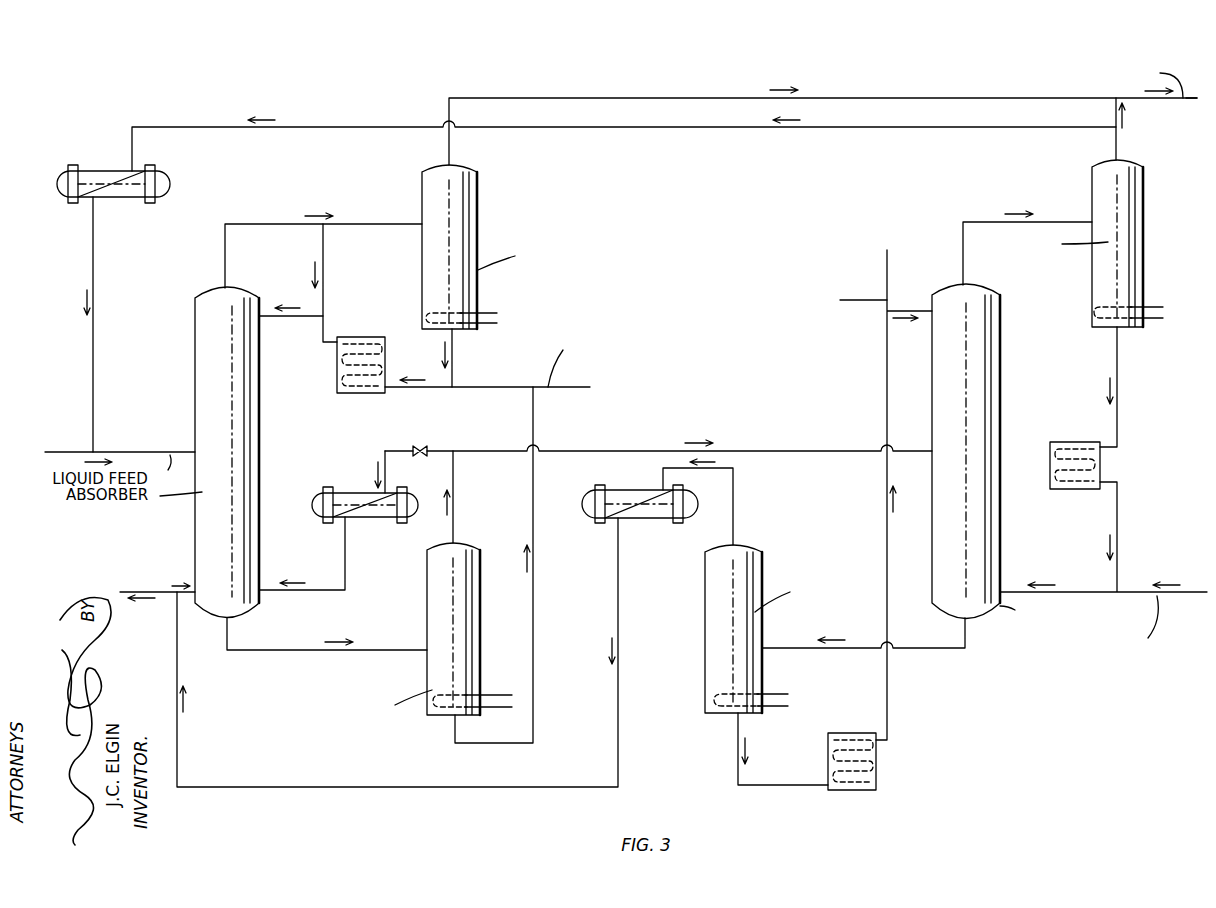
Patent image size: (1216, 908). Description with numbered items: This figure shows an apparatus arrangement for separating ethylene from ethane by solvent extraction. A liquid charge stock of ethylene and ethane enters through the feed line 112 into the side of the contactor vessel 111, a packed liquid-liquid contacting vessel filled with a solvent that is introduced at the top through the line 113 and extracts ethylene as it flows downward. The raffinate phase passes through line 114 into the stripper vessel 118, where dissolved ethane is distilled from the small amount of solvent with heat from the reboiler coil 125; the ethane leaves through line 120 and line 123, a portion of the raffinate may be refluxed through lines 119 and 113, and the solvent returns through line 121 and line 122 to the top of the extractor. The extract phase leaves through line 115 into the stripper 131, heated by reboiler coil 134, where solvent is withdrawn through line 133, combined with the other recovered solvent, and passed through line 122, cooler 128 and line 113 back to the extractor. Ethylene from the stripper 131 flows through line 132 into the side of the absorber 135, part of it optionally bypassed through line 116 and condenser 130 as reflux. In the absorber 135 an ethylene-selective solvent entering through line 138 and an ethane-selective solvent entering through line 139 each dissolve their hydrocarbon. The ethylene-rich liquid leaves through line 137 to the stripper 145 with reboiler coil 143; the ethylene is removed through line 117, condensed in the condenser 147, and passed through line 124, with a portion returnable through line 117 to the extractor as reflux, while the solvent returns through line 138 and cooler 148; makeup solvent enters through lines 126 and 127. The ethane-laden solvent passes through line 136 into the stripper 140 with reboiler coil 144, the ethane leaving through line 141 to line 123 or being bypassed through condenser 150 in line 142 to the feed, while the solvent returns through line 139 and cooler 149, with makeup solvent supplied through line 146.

The contactor vessel 111 is at (195, 352).
The feed line 112 is at (180, 452).
The line 113 is at (265, 318).
The line 114 is at (225, 276).
The line 115 is at (330, 650).
The line 116 is at (347, 570).
The line 117 is at (186, 606).
The stripper vessel 118 is at (478, 220).
The line 119 is at (325, 272).
The line 120 is at (610, 98).
The line 121 is at (456, 366).
The line 122 is at (410, 388).
The line 123 is at (1195, 100).
The line 124 is at (155, 592).
The reboiler coil 125 is at (432, 312).
The line 126 is at (552, 385).
The line 127 is at (887, 272).
The cooler 128 is at (337, 385).
The condenser 130 is at (360, 495).
The stripper 131 is at (427, 628).
The line 132 is at (508, 450).
The line 133 is at (536, 418).
The reboiler coil 134 is at (445, 698).
The absorber 135 is at (1000, 355).
The line 136 is at (990, 221).
The line 137 is at (968, 648).
The line 138 is at (893, 310).
The line 139 is at (1120, 410).
The stripper 140 is at (1145, 246).
The line 141 is at (1120, 148).
The line 142 is at (93, 415).
The reboiler coil 143 is at (722, 694).
The reboiler coil 144 is at (1100, 308).
The stripper 145 is at (705, 598).
The line 146 is at (1160, 598).
The condenser 147 is at (640, 492).
The cooler 148 is at (878, 780).
The cooler 149 is at (1085, 442).
The condenser 150 is at (125, 172).